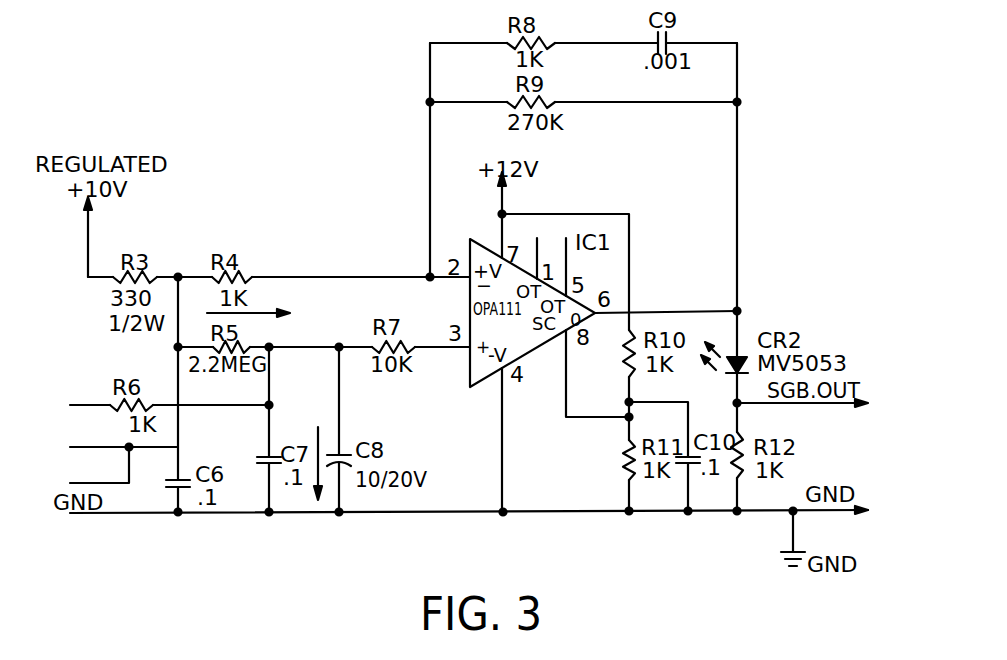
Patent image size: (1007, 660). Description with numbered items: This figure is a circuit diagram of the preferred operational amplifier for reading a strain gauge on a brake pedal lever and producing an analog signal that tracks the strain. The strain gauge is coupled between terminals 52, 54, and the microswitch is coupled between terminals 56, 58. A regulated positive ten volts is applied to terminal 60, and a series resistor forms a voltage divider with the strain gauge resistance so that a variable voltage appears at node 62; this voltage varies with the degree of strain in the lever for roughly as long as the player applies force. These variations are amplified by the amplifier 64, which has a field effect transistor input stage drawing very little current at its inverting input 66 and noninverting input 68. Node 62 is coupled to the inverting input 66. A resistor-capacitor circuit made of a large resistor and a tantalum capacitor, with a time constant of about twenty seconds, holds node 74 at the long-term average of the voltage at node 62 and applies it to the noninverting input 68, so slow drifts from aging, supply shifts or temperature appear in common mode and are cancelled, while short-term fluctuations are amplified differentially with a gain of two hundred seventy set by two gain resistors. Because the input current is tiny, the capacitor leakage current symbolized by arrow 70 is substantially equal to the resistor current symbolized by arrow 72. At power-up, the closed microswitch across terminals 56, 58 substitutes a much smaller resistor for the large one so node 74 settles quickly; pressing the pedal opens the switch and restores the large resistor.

The terminal 52 is at (95, 481).
The terminal 54 is at (168, 511).
The terminal 56 is at (90, 404).
The terminal 58 is at (92, 446).
The terminal 60 is at (90, 237).
The node 62 is at (178, 347).
The operational amplifier 64 is at (480, 240).
The inverting input 66 is at (448, 278).
The noninverting input 68 is at (444, 350).
The arrow 70 is at (317, 467).
The arrow 72 is at (263, 310).
The node 74 is at (339, 347).